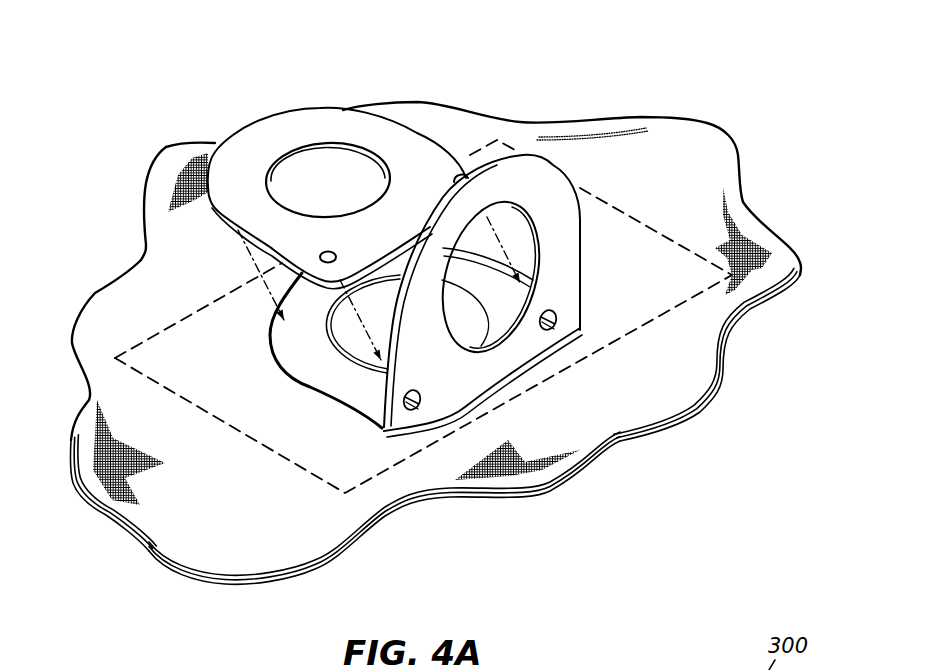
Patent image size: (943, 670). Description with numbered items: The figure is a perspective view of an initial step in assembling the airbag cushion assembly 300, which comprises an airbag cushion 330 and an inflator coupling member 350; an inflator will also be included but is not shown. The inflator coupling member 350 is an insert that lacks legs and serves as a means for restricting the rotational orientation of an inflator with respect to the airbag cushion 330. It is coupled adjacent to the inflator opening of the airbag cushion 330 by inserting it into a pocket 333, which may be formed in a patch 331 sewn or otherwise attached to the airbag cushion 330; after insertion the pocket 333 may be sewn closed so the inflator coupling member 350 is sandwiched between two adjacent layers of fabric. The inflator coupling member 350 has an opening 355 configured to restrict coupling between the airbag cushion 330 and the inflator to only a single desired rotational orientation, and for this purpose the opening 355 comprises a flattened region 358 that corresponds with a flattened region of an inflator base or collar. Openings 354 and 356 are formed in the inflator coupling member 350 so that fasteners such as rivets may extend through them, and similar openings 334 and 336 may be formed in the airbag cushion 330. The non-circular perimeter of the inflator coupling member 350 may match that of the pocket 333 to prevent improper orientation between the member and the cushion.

The airbag cushion assembly 300 is at (760, 114).
The airbag cushion 330 is at (655, 395).
The patch 331 is at (663, 230).
The pocket 333 is at (318, 383).
The opening 334 is at (431, 415).
The opening 336 is at (576, 328).
The inflator coupling member 350 is at (400, 150).
The opening 354 is at (304, 242).
The opening 355 is at (307, 175).
The opening 356 is at (462, 170).
The flattened region 358 is at (363, 212).